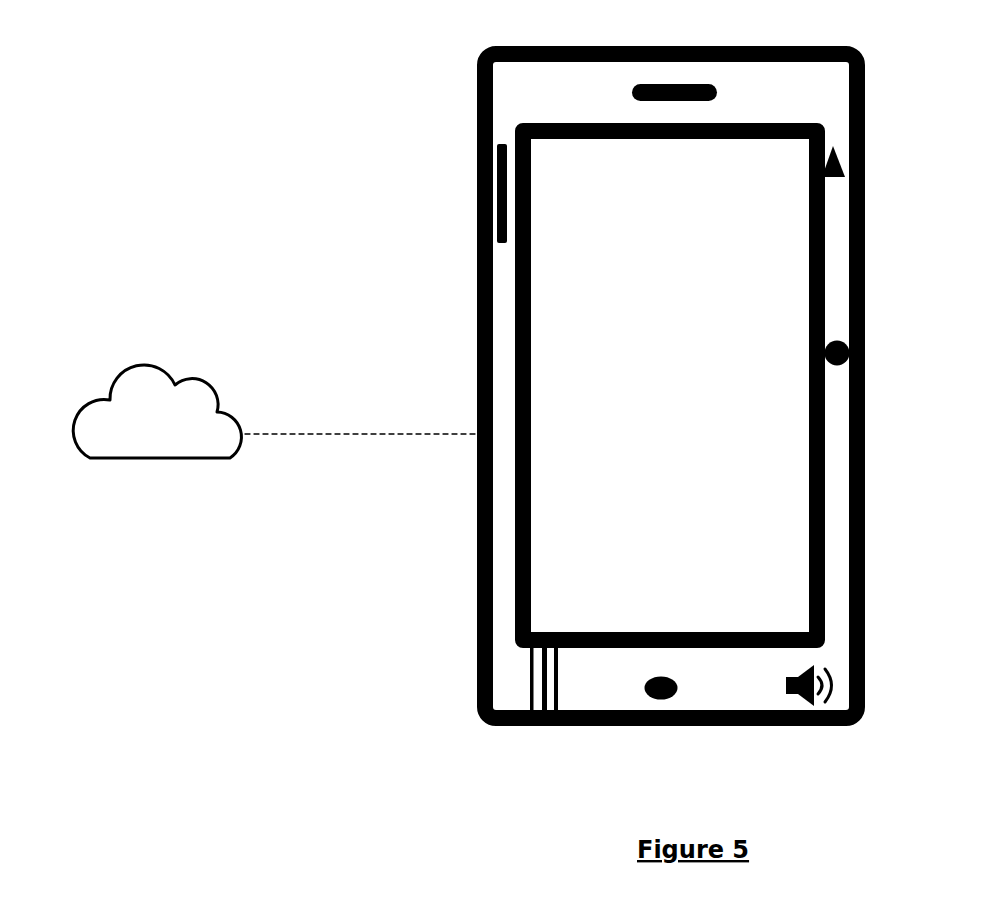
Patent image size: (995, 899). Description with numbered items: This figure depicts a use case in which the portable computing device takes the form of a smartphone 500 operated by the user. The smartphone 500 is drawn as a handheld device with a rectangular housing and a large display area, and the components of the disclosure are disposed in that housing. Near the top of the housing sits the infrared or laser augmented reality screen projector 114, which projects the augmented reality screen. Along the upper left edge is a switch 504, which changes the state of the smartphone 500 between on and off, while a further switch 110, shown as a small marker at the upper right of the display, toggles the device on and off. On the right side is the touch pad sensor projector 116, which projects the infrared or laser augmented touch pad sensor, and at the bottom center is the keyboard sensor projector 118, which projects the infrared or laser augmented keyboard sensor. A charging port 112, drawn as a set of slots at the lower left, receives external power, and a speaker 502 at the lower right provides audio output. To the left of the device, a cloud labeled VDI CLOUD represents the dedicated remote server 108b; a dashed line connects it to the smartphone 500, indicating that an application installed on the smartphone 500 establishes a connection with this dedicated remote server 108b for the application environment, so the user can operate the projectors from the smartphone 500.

The smartphone 500 is at (137, 97).
The dedicated remote server 108b is at (157, 411).
The screen projector 114 is at (682, 84).
The switch 504 is at (500, 191).
The switch 110 is at (840, 160).
The touch pad sensor projector 116 is at (863, 348).
The speaker 502 is at (840, 687).
The charging port 112 is at (543, 691).
The keyboard sensor projector 118 is at (661, 676).